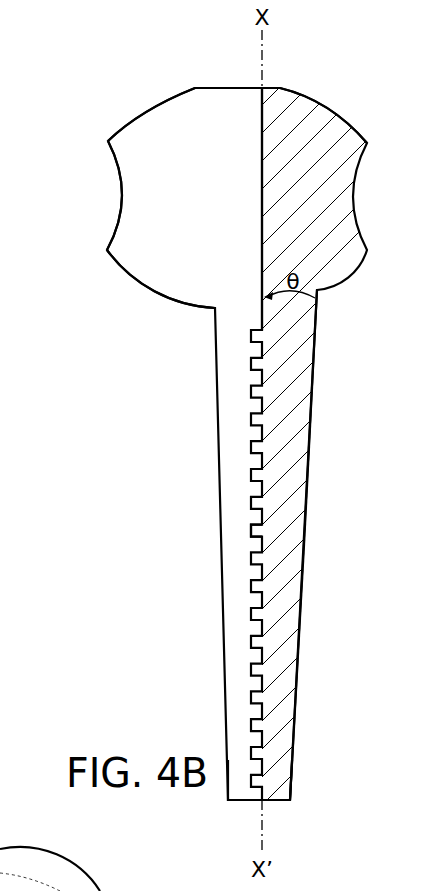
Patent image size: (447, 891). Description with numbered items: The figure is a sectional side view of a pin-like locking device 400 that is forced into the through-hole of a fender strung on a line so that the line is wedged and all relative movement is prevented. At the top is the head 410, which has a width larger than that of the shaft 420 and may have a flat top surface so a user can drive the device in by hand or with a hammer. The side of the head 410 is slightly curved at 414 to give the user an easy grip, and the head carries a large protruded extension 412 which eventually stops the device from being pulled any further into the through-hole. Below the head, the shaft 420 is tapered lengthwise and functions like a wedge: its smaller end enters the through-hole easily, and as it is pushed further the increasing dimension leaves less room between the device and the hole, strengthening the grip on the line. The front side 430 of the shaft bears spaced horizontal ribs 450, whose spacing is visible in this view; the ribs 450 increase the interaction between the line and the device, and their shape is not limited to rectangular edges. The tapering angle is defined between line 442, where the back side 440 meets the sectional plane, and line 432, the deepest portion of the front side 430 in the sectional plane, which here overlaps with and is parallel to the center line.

The locking device 400 is at (318, 94).
The head 410 is at (140, 105).
The large protruded extension 412 is at (163, 293).
The curved side of head 414 is at (108, 243).
The shaft 420 is at (347, 797).
The front side 430 is at (253, 619).
The line representing deepest portion of front side 432 is at (262, 245).
The back side 440 is at (307, 473).
The line representing back side 442 is at (297, 647).
The horizontal ribs 450 is at (253, 535).